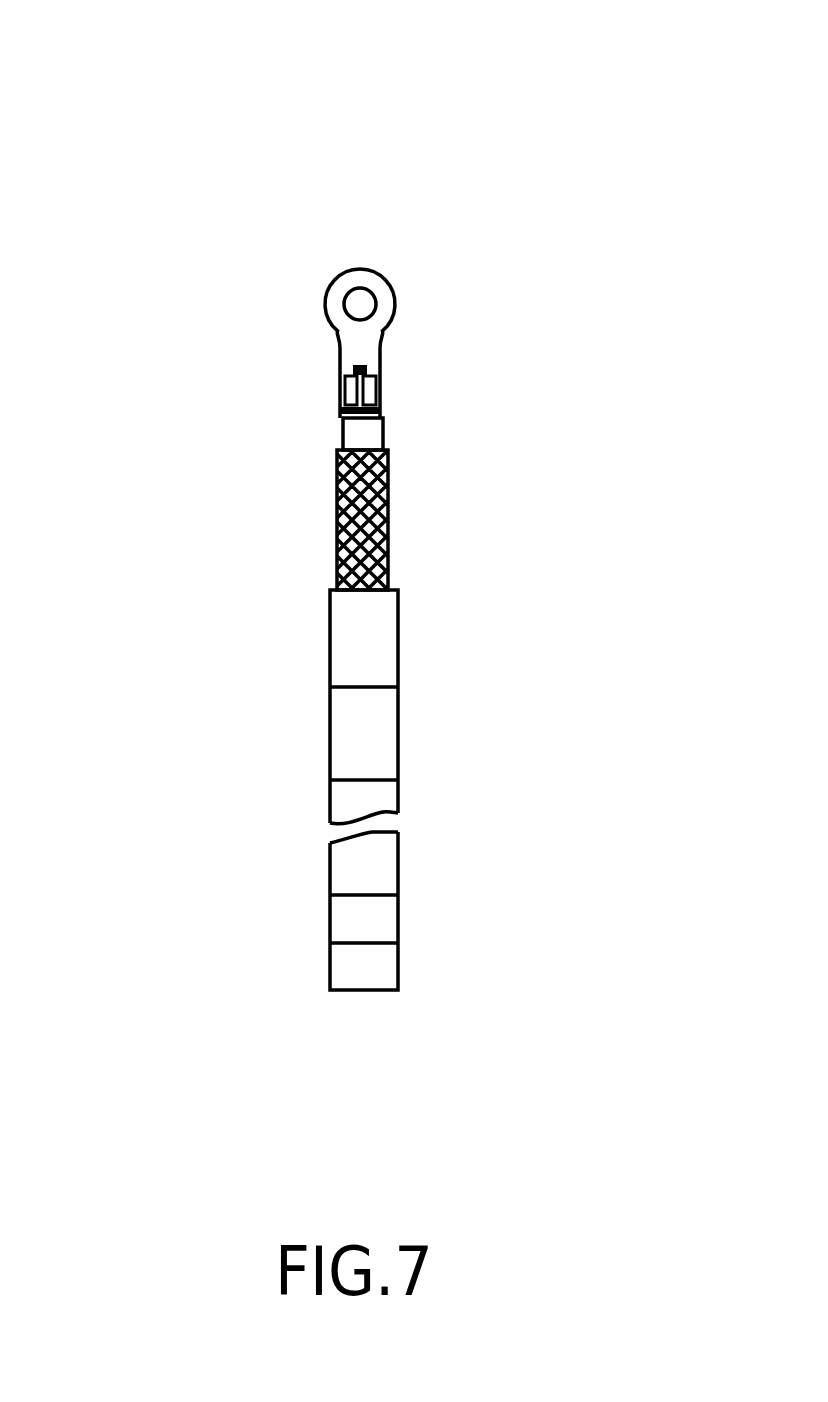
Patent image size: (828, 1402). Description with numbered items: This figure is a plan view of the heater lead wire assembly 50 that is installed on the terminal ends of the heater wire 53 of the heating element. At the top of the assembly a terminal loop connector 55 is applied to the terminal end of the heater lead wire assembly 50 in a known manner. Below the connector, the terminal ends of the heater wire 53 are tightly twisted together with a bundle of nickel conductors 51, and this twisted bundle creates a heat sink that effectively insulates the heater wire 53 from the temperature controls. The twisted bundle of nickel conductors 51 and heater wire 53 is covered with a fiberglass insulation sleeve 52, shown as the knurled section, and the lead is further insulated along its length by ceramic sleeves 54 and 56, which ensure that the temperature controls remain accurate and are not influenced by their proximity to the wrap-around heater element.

The heater lead wire assembly 50 is at (483, 223).
The bundle of nickel conductors 51 is at (347, 412).
The fiberglass insulation sleeve 52 is at (380, 497).
The heater wire 53 is at (378, 415).
The ceramic sleeve 54 is at (365, 642).
The terminal loop connector 55 is at (383, 310).
The ceramic sleeve 56 is at (365, 920).